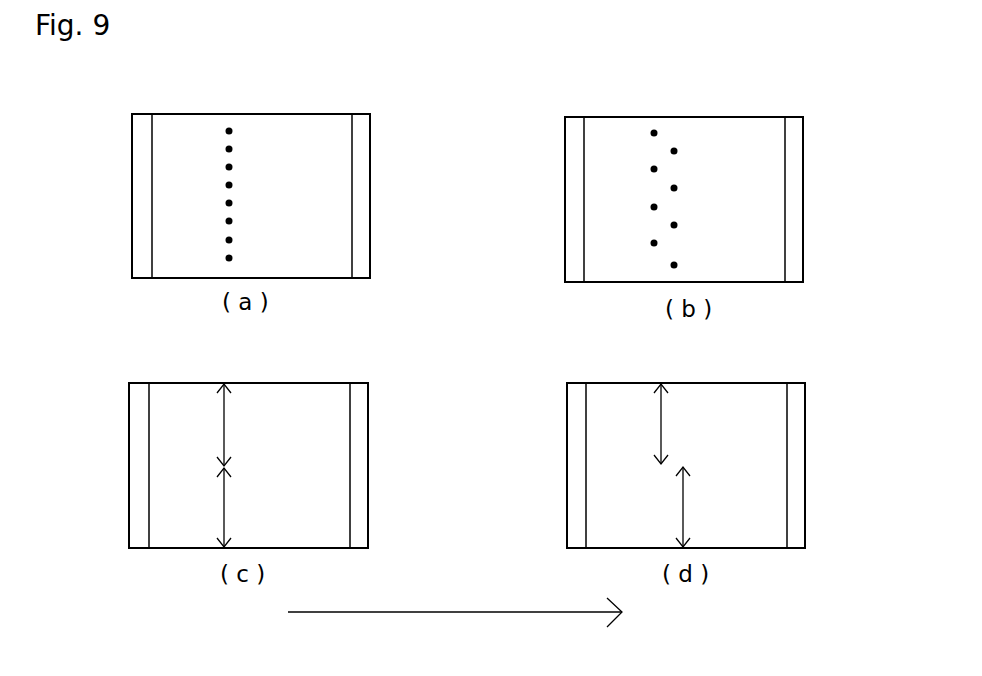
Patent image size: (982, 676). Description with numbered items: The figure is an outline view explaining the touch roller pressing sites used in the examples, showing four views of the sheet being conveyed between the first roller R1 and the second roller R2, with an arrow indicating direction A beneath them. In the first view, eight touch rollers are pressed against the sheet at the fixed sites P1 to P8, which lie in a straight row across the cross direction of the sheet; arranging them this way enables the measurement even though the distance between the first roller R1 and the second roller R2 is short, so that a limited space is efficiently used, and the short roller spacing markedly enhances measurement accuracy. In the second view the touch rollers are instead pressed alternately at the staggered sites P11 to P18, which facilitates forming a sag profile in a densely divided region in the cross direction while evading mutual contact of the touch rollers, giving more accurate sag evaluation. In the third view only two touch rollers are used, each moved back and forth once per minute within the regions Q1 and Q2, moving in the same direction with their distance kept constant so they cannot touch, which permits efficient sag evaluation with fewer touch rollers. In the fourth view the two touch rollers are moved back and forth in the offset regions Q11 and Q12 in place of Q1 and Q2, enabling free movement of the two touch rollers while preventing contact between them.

The first roller R1 is at (138, 123).
The second roller R2 is at (358, 122).
The touch roller pressing site P1 is at (235, 131).
The touch roller pressing site P8 is at (234, 258).
The touch roller pressing site P11 is at (661, 133).
The touch roller pressing site P18 is at (679, 265).
The touch roller movement region Q1 is at (246, 425).
The touch roller movement region Q2 is at (246, 507).
The touch roller movement region Q11 is at (687, 424).
The touch roller movement region Q12 is at (708, 507).
The direction A is at (455, 621).